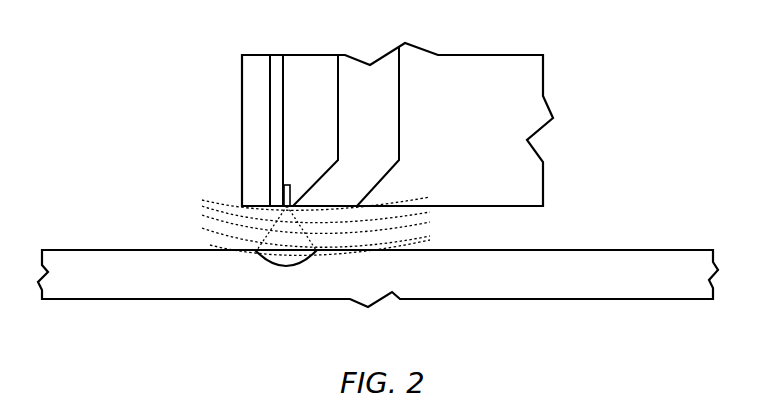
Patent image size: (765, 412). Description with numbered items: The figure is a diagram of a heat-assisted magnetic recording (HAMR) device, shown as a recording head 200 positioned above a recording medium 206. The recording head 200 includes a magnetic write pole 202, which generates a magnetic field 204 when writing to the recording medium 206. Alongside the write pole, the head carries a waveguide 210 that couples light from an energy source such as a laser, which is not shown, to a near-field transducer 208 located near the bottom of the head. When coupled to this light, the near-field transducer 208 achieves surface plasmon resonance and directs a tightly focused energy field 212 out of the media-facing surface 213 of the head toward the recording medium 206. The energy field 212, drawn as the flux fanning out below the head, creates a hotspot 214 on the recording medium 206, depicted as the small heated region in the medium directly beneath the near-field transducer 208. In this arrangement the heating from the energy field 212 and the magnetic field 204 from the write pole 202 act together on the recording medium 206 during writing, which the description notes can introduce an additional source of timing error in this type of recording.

The recording head 200 is at (544, 78).
The magnetic write pole 202 is at (367, 62).
The magnetic field 204 is at (430, 215).
The recording medium 206 is at (657, 250).
The near-field transducer 208 is at (285, 192).
The waveguide 210 is at (270, 100).
The energy field 212 is at (258, 228).
The media-facing surface 213 is at (517, 206).
The hotspot 214 is at (287, 266).